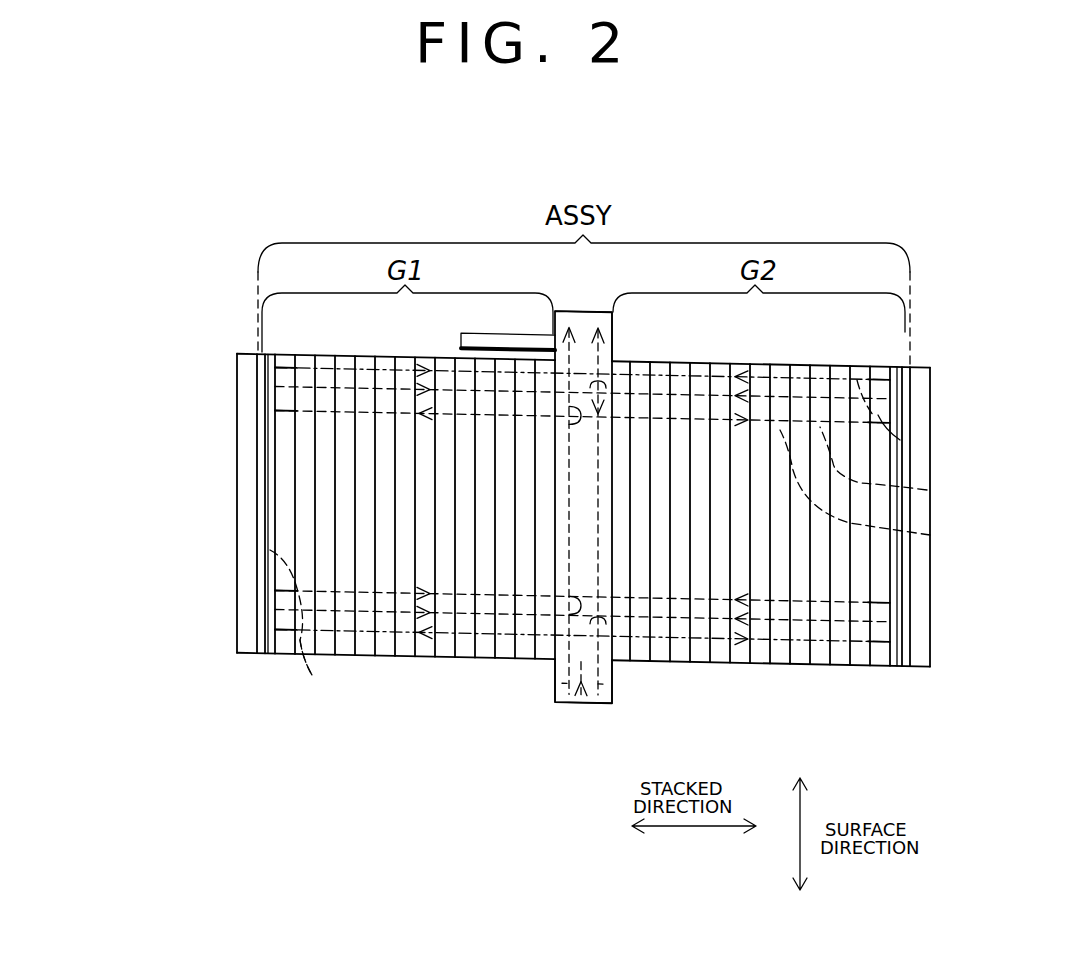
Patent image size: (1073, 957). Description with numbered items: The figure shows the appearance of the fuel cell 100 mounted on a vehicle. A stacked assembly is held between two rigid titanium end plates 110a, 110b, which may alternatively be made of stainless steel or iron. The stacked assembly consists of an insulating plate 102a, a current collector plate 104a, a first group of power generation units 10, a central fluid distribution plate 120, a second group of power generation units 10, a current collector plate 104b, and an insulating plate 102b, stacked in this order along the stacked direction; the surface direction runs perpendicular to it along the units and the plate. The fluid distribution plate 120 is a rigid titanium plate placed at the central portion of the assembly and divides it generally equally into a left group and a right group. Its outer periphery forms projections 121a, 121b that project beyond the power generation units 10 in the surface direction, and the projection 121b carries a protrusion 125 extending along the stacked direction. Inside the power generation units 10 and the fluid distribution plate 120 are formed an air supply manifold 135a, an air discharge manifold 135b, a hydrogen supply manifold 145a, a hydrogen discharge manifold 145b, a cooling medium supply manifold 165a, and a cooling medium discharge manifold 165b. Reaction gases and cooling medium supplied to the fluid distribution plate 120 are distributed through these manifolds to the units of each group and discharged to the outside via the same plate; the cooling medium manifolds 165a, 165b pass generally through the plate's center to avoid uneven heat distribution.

The fuel cell 100 is at (266, 168).
The power generation unit 10 is at (445, 361).
The insulating plate 102a is at (262, 353).
The insulating plate 102b is at (905, 367).
The current collector plate 104a is at (273, 354).
The current collector plate 104b is at (894, 366).
The end plate 110a is at (237, 637).
The end plate 110b is at (915, 632).
The fluid distribution plate 120 is at (583, 311).
The projection 121a is at (605, 691).
The projection 121b is at (608, 327).
The protrusion 125 is at (538, 338).
The air supply manifold 135a is at (383, 634).
The air discharge manifold 135b is at (900, 440).
The hydrogen supply manifold 145a is at (270, 550).
The hydrogen discharge manifold 145b is at (930, 535).
The cooling medium supply manifold 165a is at (312, 675).
The cooling medium discharge manifold 165b is at (927, 490).